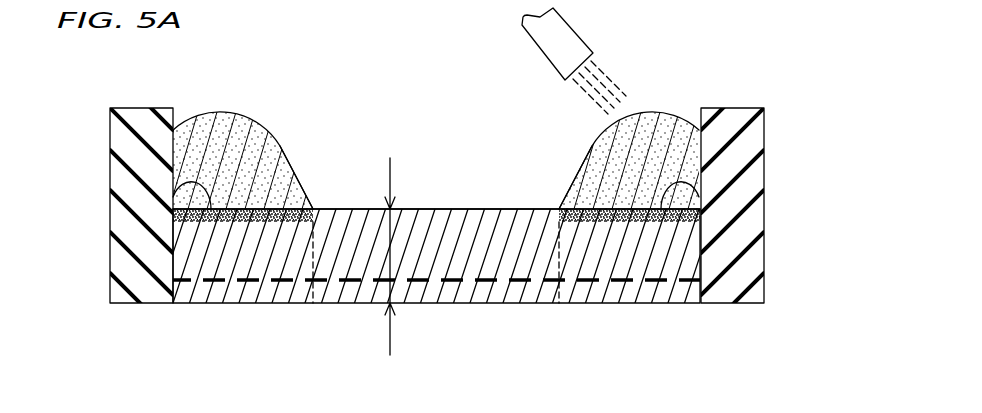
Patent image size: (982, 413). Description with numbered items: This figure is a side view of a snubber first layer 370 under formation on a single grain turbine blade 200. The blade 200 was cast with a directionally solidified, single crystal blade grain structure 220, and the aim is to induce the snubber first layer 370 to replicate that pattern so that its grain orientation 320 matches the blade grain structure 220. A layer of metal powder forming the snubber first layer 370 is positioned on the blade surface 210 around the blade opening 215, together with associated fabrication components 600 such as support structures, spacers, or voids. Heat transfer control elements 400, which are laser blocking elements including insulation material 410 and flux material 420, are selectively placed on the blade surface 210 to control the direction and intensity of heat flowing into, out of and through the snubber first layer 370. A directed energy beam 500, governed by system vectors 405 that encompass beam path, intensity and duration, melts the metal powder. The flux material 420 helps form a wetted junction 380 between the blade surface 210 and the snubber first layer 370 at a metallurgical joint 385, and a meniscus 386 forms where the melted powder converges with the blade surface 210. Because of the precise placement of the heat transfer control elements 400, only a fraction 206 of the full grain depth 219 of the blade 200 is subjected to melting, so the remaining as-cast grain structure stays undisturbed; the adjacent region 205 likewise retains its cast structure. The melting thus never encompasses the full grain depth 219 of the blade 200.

The blade 200 is at (668, 303).
The first region of substrate 205 is at (290, 257).
The fraction of a full grain depth 206 is at (590, 283).
The blade surface 210 is at (425, 209).
The blade opening 215 is at (484, 303).
The full grain depth 219 is at (392, 334).
The blade grain structure 220 is at (222, 257).
The grain orientation of the snubber first layer 320 is at (220, 137).
The snubber first layer 370 is at (219, 140).
The wetted junction 380 is at (180, 183).
The metallurgical joint 385 is at (242, 208).
The meniscus 386 is at (283, 208).
The heat transfer control elements 400 is at (110, 132).
The system vectors 405 is at (562, 42).
The insulation material 410 is at (122, 247).
The flux material 420 is at (287, 207).
The directed energy beam 500 is at (543, 57).
The fabrication components 600 is at (110, 178).